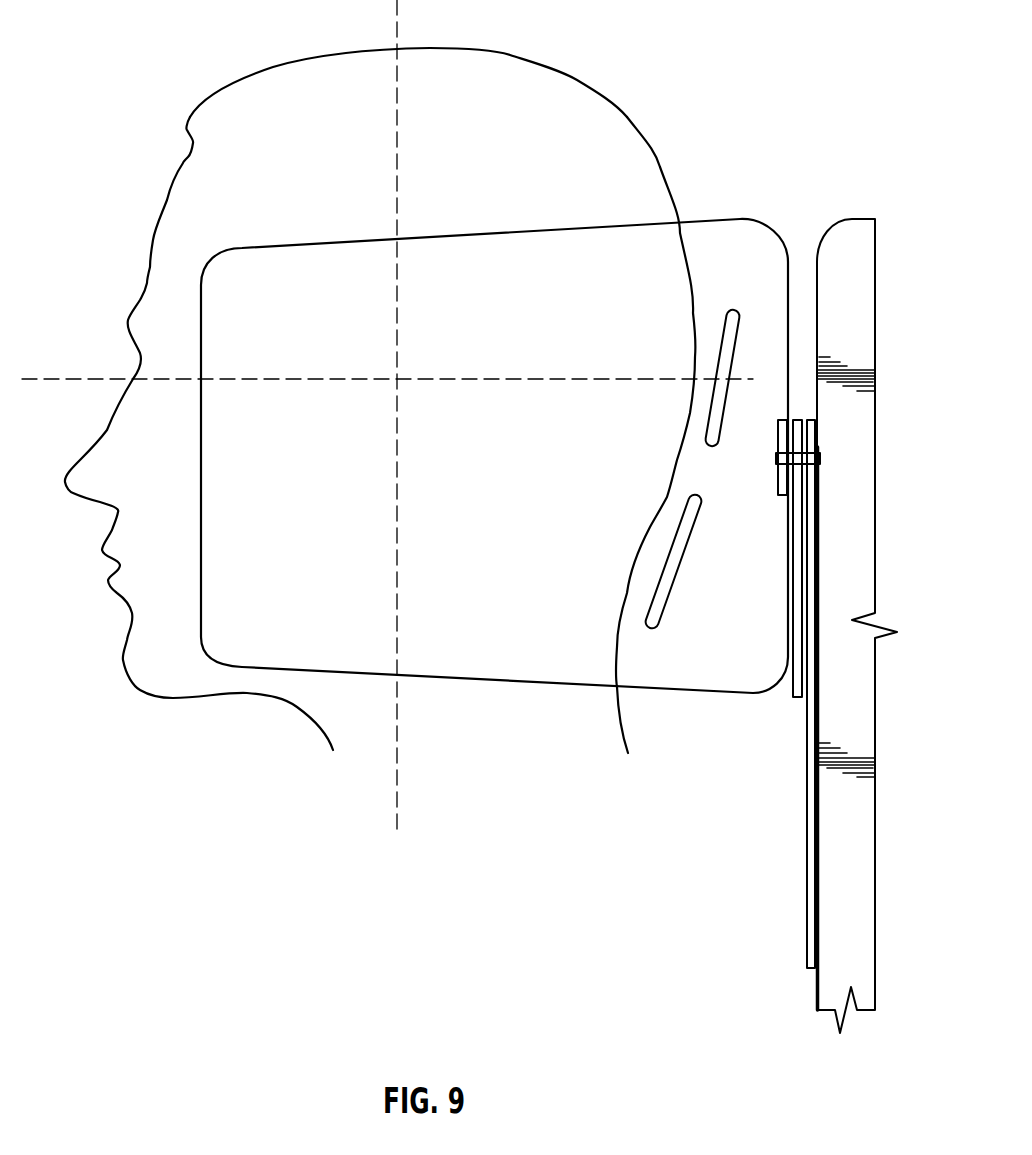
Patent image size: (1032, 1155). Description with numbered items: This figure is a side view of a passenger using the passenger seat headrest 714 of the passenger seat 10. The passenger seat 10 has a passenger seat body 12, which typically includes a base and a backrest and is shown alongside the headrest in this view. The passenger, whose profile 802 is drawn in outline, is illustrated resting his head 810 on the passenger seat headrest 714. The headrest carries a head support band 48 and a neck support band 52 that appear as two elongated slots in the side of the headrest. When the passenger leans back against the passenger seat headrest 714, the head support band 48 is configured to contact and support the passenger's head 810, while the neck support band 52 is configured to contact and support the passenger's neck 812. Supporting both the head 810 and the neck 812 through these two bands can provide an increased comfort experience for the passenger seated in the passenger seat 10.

The passenger seat 10 is at (848, 199).
The passenger seat body 12 is at (862, 267).
The head support band 48 is at (727, 325).
The neck support band 52 is at (678, 568).
The passenger seat headrest 714 is at (740, 217).
The user's head 802 is at (268, 77).
The head 810 is at (513, 53).
The neck 812 is at (652, 527).